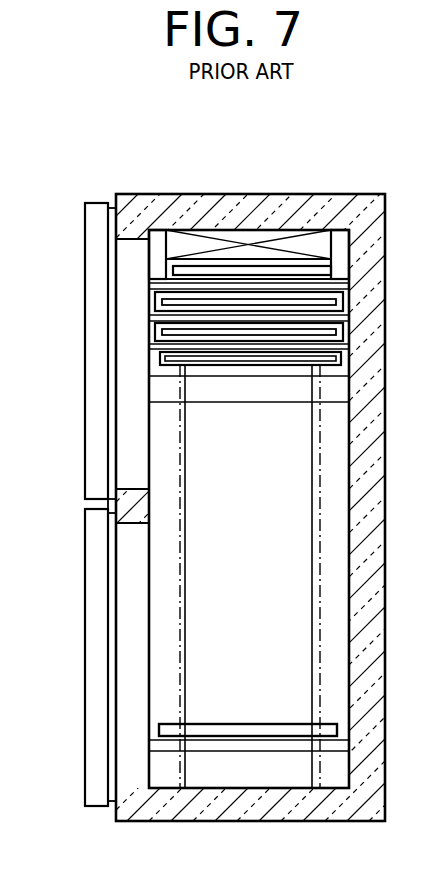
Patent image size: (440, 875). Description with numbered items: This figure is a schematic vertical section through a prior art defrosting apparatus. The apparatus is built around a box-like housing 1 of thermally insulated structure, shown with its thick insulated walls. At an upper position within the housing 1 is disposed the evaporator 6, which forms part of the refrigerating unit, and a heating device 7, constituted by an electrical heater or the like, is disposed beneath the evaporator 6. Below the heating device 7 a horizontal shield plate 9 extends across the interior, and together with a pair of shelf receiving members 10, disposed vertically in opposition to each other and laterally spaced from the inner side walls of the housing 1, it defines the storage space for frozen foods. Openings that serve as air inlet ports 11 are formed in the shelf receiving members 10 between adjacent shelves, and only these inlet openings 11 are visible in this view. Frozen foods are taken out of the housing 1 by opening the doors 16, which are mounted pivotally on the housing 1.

The housing 1 is at (165, 191).
The evaporator 6 is at (240, 235).
The heating device 7 is at (280, 267).
The shield plate 9 is at (337, 277).
The shelf receiving members 10 is at (160, 606).
The air inlet port 11 is at (221, 300).
The door 16 is at (97, 215).